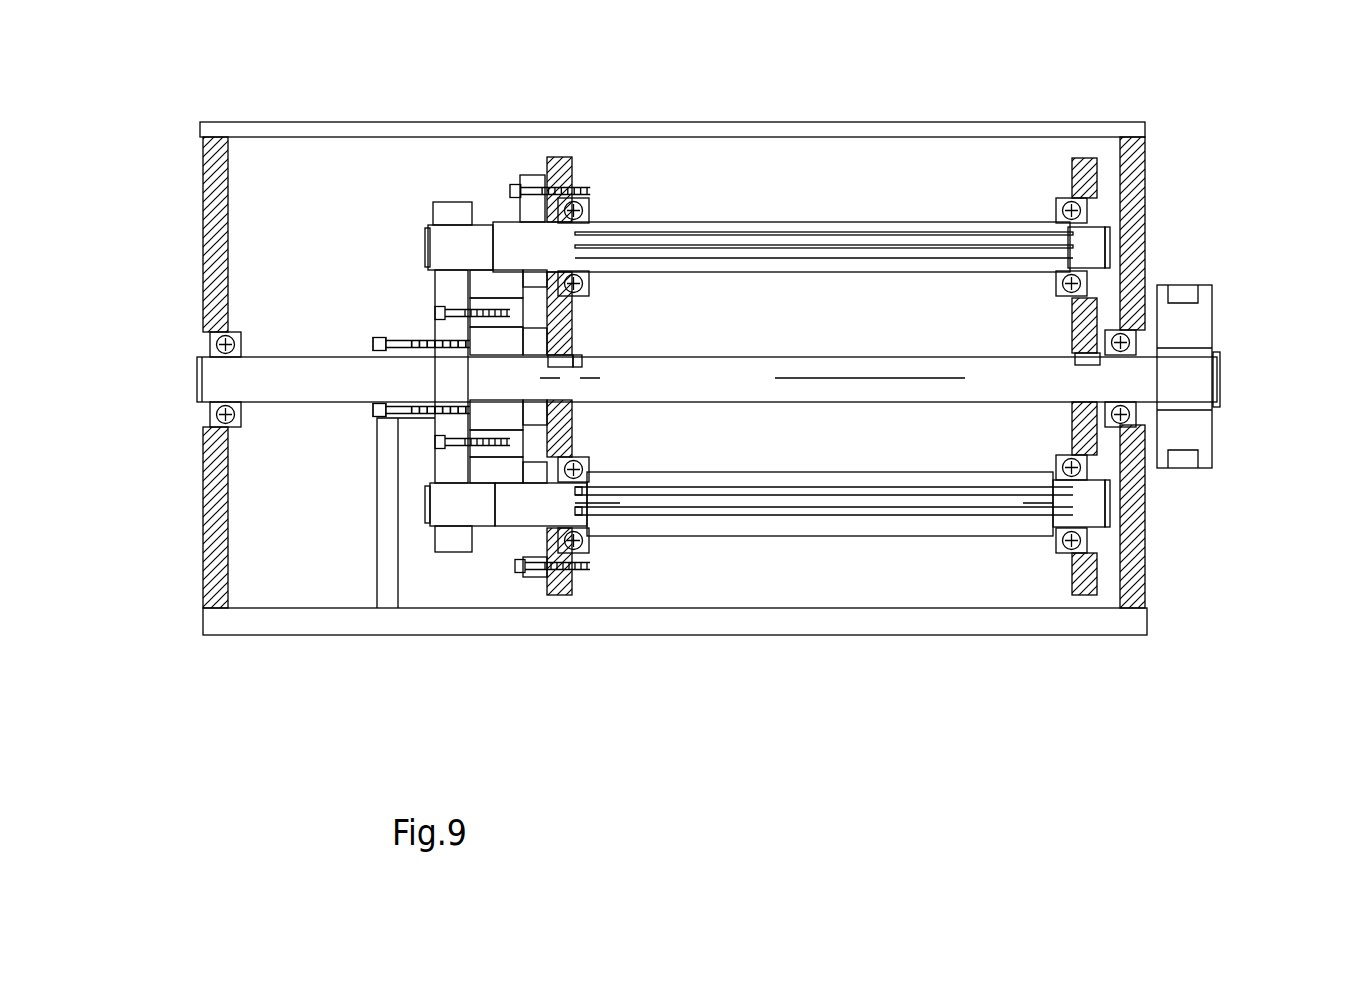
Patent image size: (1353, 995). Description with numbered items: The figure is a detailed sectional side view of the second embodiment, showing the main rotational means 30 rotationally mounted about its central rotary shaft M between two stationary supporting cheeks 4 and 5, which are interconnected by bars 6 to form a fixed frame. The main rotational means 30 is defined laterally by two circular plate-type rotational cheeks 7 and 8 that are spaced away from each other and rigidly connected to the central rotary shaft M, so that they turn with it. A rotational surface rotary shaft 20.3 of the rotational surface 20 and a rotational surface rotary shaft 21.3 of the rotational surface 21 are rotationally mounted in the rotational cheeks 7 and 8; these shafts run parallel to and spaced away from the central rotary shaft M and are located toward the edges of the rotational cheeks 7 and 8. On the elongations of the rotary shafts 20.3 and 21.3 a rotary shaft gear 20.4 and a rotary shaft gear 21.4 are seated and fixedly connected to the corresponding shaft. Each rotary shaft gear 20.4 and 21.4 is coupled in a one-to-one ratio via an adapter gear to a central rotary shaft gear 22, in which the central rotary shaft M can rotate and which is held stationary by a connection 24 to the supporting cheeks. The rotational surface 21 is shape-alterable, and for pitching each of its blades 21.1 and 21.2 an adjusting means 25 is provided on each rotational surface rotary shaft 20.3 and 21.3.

The stationary supporting cheek 4 is at (1133, 202).
The stationary supporting cheek 5 is at (202, 510).
The bars 6 is at (215, 623).
The rotational cheek 7 is at (1093, 567).
The rotational cheek 8 is at (552, 590).
The rotational surface 20 is at (673, 247).
The rotational surface rotary shaft 20.3 is at (1083, 255).
The rotary shaft gear 20.4 is at (448, 210).
The rotational surface 21 is at (697, 503).
The blade 21.1 is at (680, 512).
The blade 21.2 is at (1002, 492).
The rotational surface rotary shaft 21.3 is at (1097, 512).
The rotary shaft gear 21.4 is at (460, 540).
The central rotary shaft gear 22 is at (437, 337).
The connection 24 is at (385, 450).
The adjusting means 25 is at (533, 213).
The main rotational means 30 is at (695, 382).
The central rotary shaft M is at (1180, 378).